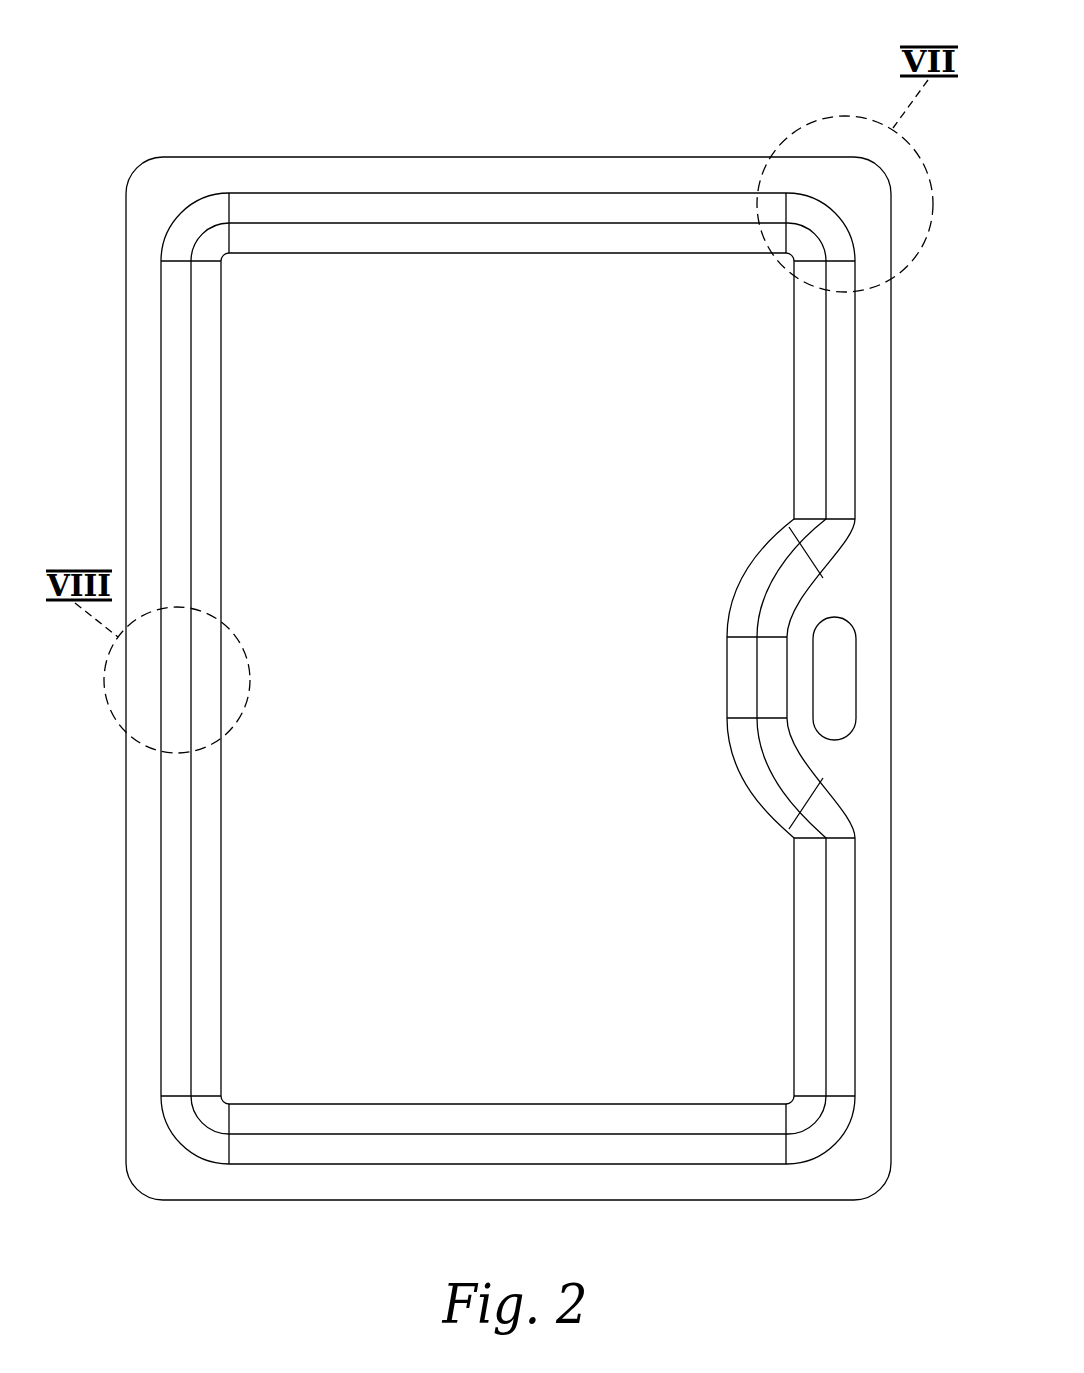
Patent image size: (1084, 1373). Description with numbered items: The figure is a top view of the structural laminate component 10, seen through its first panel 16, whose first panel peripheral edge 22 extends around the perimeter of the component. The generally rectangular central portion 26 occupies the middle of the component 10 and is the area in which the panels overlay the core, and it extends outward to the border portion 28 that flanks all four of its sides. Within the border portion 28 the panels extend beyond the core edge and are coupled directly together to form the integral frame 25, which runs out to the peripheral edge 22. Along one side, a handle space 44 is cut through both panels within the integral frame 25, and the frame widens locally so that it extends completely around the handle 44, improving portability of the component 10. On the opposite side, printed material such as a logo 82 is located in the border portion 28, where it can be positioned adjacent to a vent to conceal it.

The structural laminate component 10 is at (735, 128).
The first panel 16 is at (253, 403).
The first panel peripheral edge 22 is at (127, 898).
The integral frame 25 is at (145, 280).
The central portion 26 is at (303, 945).
The border portion 28 is at (161, 773).
The handle space 44 is at (835, 640).
The logo 82 is at (177, 687).